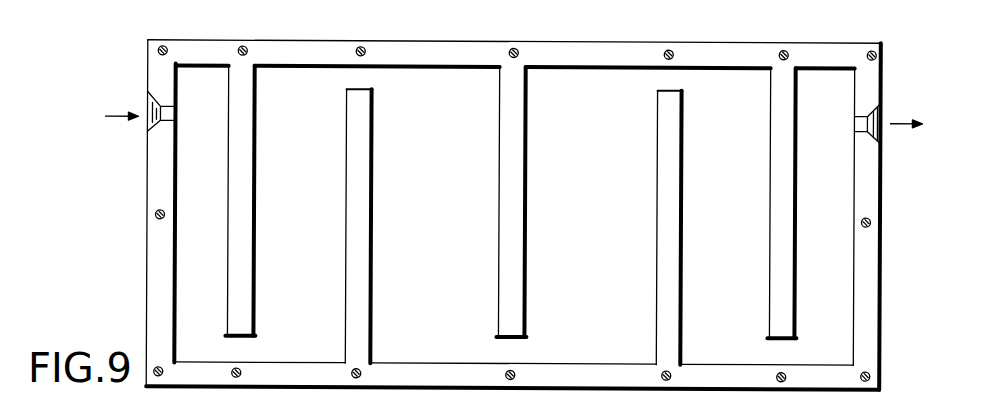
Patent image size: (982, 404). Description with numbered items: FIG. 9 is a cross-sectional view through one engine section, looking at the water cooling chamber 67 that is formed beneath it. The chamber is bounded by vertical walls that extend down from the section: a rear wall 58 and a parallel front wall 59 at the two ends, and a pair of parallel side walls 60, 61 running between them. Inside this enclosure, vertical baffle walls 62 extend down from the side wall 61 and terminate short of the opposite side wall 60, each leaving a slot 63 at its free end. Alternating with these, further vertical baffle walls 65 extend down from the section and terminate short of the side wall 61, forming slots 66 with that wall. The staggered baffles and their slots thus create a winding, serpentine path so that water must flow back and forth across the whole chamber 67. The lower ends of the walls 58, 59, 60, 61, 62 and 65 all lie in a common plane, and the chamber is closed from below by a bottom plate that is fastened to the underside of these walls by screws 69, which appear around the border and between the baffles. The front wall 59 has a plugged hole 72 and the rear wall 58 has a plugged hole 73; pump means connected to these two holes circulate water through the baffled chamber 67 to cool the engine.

The rear wall 58 is at (155, 272).
The front wall 59 is at (873, 277).
The side wall 60 is at (458, 352).
The side wall 61 is at (553, 47).
The baffle wall 62 is at (250, 237).
The slot 63 is at (243, 350).
The baffle wall 65 is at (373, 201).
The slot 66 is at (362, 80).
The water cooling chamber 67 is at (514, 214).
The screw 69 is at (869, 50).
The plugged hole 72 is at (873, 143).
The plugged hole 73 is at (155, 130).